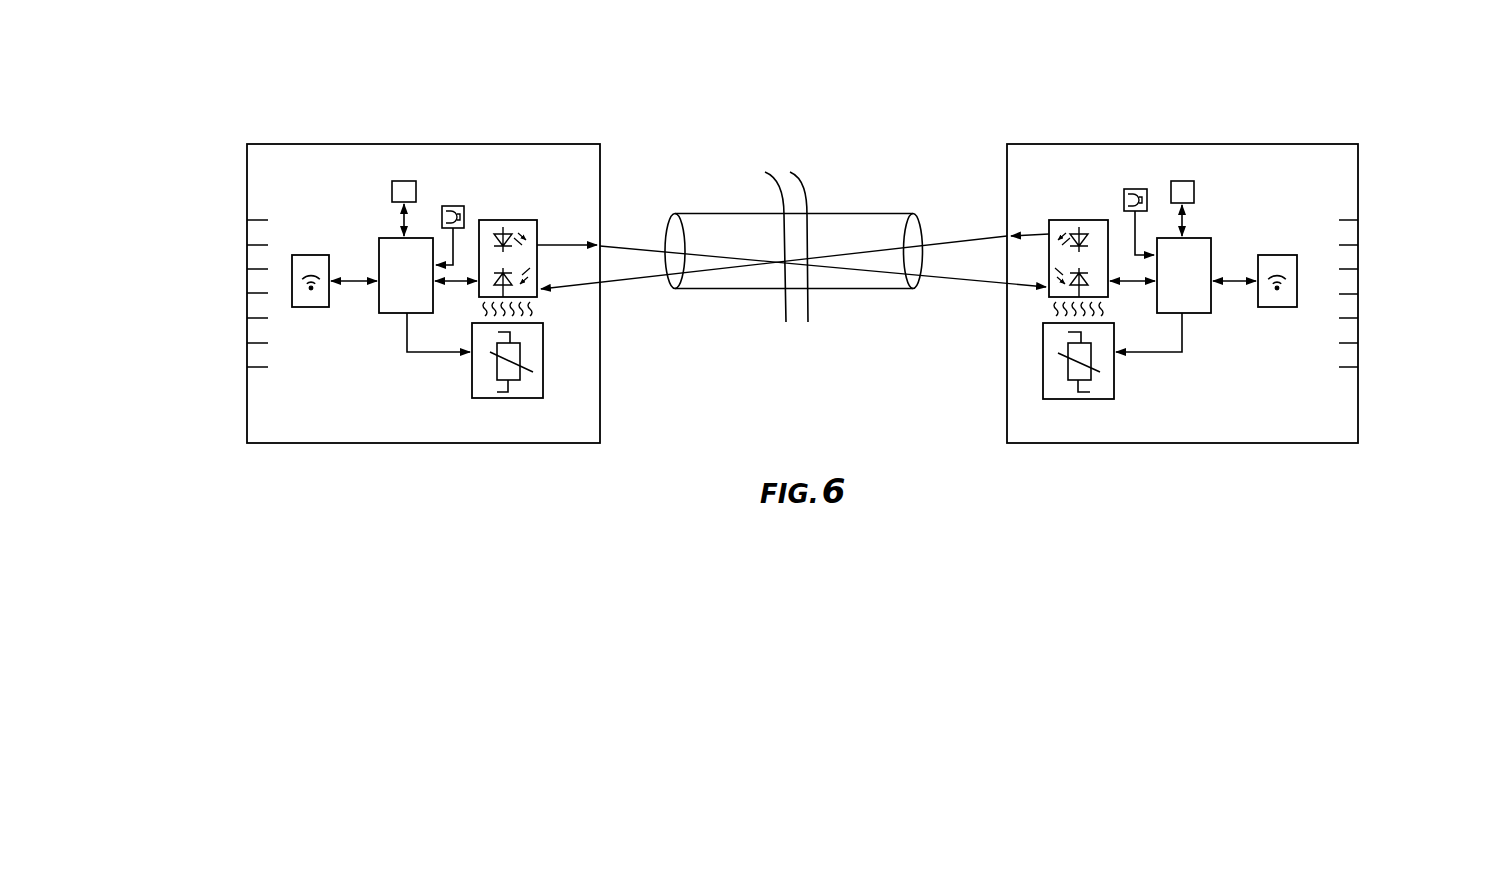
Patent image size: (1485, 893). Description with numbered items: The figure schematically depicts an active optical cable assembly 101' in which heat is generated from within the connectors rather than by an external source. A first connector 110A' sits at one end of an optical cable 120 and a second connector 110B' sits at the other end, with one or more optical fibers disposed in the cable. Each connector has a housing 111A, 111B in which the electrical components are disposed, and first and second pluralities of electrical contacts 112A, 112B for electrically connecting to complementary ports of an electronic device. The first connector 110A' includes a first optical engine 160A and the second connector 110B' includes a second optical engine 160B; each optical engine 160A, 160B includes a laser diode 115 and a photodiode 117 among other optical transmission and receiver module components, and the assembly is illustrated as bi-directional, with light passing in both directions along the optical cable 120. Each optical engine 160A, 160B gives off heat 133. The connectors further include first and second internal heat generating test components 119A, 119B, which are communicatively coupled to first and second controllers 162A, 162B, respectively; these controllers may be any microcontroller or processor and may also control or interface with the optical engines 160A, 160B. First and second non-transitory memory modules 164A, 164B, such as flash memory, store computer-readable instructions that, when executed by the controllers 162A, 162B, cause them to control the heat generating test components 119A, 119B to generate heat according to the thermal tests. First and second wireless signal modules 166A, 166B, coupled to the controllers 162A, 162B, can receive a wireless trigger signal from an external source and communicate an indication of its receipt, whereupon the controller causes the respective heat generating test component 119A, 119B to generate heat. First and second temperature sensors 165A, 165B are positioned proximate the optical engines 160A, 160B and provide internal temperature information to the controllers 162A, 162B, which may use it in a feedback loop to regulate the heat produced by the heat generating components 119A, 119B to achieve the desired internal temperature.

The active optical cable assembly 101' is at (793, 151).
The first connector 110A' is at (381, 261).
The second connector 110B' is at (1212, 271).
The housing 111A is at (508, 143).
The housing 111B is at (1268, 143).
The first plurality of electrical contacts 112A is at (238, 370).
The second plurality of electrical contacts 112B is at (1363, 375).
The laser diode 115 is at (524, 236).
The photodiode 117 is at (538, 295).
The first internal heat generating test component 119A is at (512, 401).
The second internal heat generating test component 119B is at (1082, 403).
The optical cable 120 is at (727, 306).
The heat 133 is at (481, 311).
The first optical engine 160A is at (790, 262).
The second optical engine 160B is at (1093, 217).
The first controller 162A is at (388, 316).
The second controller 162B is at (1201, 316).
The first non-transitory memory module 164A is at (389, 192).
The second non-transitory memory module 164B is at (1197, 194).
The first temperature sensor 165A is at (455, 205).
The second temperature sensor 165B is at (1143, 189).
The first wireless signal module 166A is at (324, 310).
The second wireless signal module 166B is at (1289, 310).